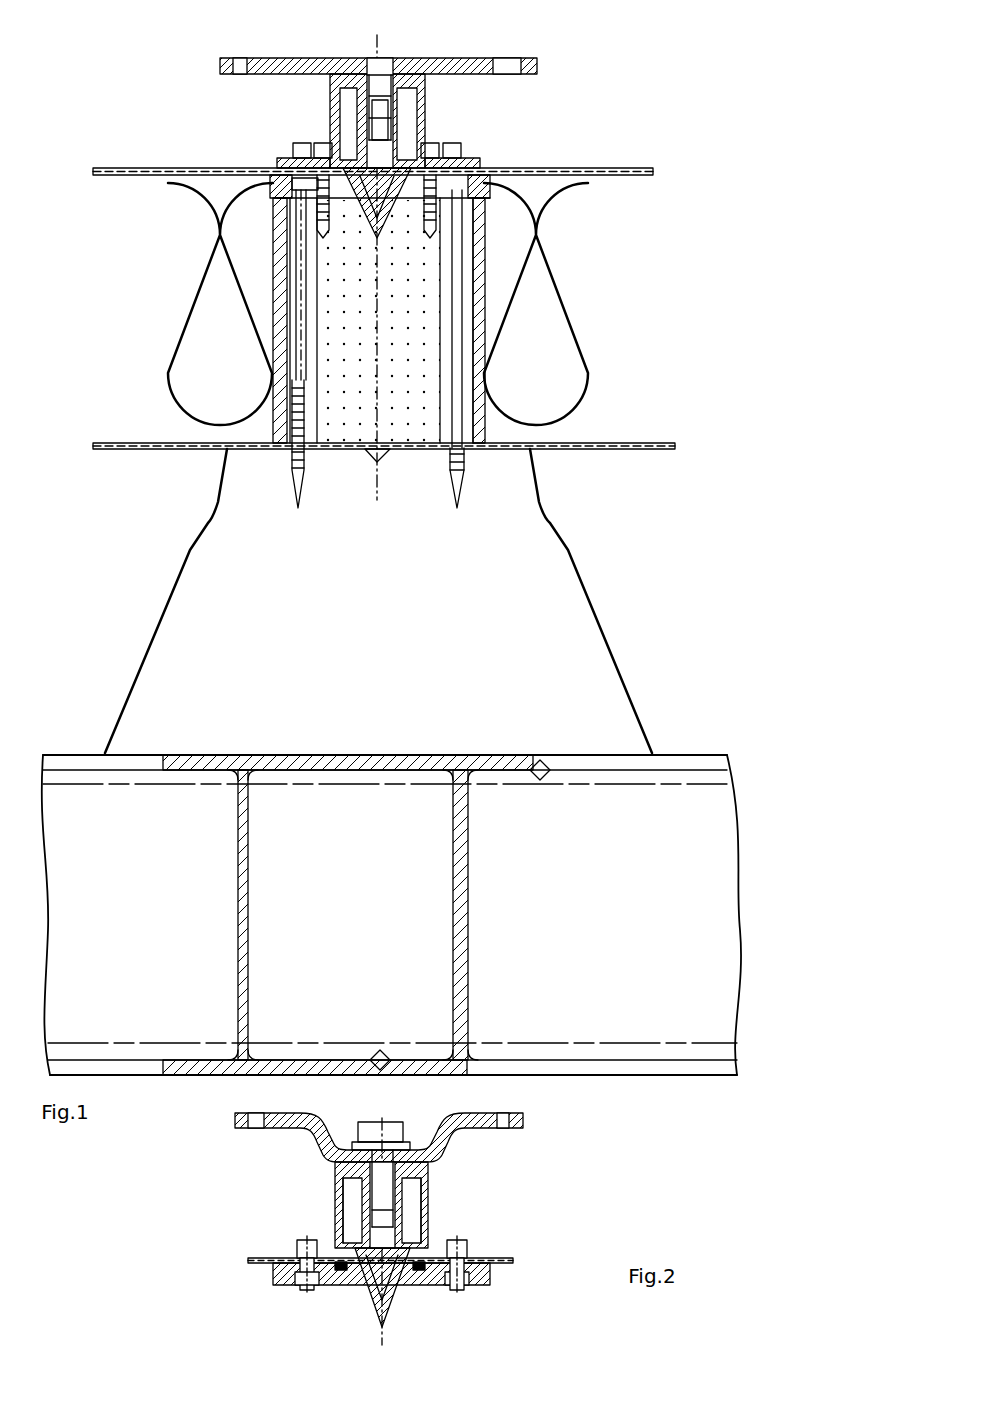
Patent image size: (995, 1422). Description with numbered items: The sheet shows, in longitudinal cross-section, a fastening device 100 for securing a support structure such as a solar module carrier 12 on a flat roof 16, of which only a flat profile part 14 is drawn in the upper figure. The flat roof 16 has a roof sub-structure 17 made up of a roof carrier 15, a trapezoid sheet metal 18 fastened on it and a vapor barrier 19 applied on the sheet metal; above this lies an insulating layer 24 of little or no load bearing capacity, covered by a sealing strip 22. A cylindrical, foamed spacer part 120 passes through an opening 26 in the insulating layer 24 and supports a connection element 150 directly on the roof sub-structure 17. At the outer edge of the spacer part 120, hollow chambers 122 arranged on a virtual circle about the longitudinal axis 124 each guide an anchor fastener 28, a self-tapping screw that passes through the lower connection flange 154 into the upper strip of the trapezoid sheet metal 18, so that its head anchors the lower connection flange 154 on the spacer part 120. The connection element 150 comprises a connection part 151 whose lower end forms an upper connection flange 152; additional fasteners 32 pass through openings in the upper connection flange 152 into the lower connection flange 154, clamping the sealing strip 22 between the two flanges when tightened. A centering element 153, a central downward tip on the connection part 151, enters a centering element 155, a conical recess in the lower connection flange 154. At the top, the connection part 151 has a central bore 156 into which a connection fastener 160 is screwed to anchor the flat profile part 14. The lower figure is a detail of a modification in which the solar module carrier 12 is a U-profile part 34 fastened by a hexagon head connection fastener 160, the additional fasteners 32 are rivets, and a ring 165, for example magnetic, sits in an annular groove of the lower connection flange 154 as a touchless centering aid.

In FIG. 1, the solar module carrier 12 is at (532, 47).
In FIG. 2, the solar module carrier 12 is at (465, 1153).
In FIG. 1, the flat profile part 14 is at (505, 119).
In FIG. 1, the roof carrier 15 is at (680, 1012).
In FIG. 1, the flat roof 16 is at (633, 580).
In FIG. 1, the roof sub-structure 17 is at (725, 722).
In FIG. 1, the trapezoid sheet metal 18 is at (558, 532).
In FIG. 1, the vapor barrier 19 is at (653, 443).
In FIG. 1, the sealing strip 22 is at (648, 168).
In FIG. 1, the insulating layer 24 is at (555, 363).
In FIG. 1, the opening 26 is at (273, 236).
In FIG. 1, the anchor fastener 28 is at (298, 258).
In FIG. 1, the additional fasteners 32 is at (322, 143).
In FIG. 2, the additional fasteners 32 is at (275, 1283).
In FIG. 2, the U-profile part 34 is at (523, 1128).
In FIG. 1, the fastening device 100 is at (640, 212).
In FIG. 1, the spacer part 120 is at (490, 305).
In FIG. 1, the hollow chambers 122 is at (298, 320).
In FIG. 1, the longitudinal axis 124 is at (380, 490).
In FIG. 1, the connection element 150 is at (502, 122).
In FIG. 2, the connection element 150 is at (302, 1213).
In FIG. 1, the connection part 151 is at (310, 58).
In FIG. 2, the connection part 151 is at (335, 1178).
In FIG. 1, the upper connection flange 152 is at (480, 160).
In FIG. 2, the upper connection flange 152 is at (482, 1248).
In FIG. 1, the centering element 153 is at (377, 232).
In FIG. 2, the lower connection flange 154 is at (490, 1278).
In FIG. 1, the centering element 155 is at (277, 163).
In FIG. 1, the central bore 156 is at (385, 120).
In FIG. 1, the connection fastener 160 is at (385, 66).
In FIG. 2, the connection fastener 160 is at (432, 1163).
In FIG. 2, the ring 165 is at (335, 1280).